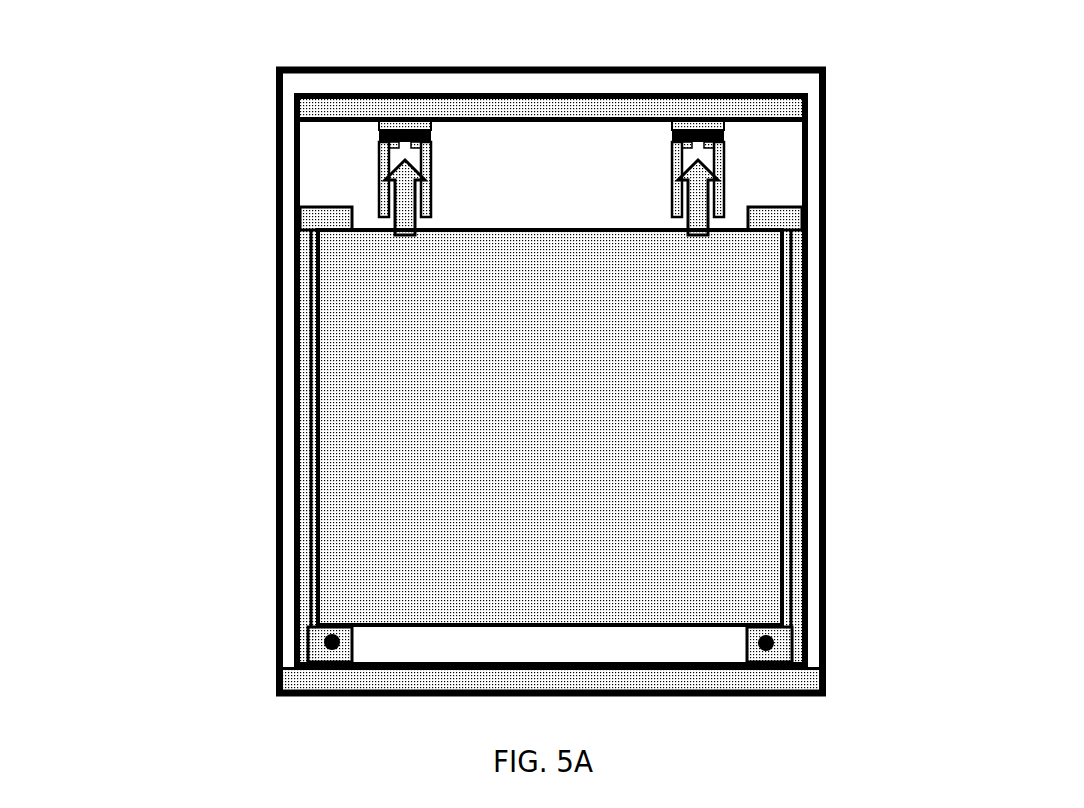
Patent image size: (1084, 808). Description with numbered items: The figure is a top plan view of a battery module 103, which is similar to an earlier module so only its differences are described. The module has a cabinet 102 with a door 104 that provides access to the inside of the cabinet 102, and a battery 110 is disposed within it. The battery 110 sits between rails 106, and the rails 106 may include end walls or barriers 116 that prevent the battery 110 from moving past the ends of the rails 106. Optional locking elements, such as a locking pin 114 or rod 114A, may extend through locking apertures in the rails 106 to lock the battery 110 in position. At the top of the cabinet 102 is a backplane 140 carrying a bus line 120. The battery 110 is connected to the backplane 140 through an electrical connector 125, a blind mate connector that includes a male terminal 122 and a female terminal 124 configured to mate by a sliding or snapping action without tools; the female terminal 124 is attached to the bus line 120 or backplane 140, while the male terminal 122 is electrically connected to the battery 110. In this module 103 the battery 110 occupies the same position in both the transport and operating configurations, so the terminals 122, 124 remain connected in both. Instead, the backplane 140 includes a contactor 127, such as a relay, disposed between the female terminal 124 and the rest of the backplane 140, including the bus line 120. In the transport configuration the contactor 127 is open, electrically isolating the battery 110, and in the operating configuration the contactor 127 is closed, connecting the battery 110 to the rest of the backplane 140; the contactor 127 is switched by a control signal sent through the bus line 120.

The cabinet 102 is at (825, 377).
The battery module 103 is at (575, 22).
The door 104 is at (278, 680).
The rails 106 is at (307, 433).
The battery 110 is at (577, 445).
The locking pin 114 is at (424, 609).
The rod 114A is at (325, 635).
The end wall or barrier 116 is at (307, 215).
The bus line 120 is at (432, 125).
The male terminal 122 is at (403, 203).
The female terminal 124 is at (382, 175).
The electrical connector 125 is at (130, 117).
The contactor 127 is at (432, 135).
The backplane 140 is at (803, 112).